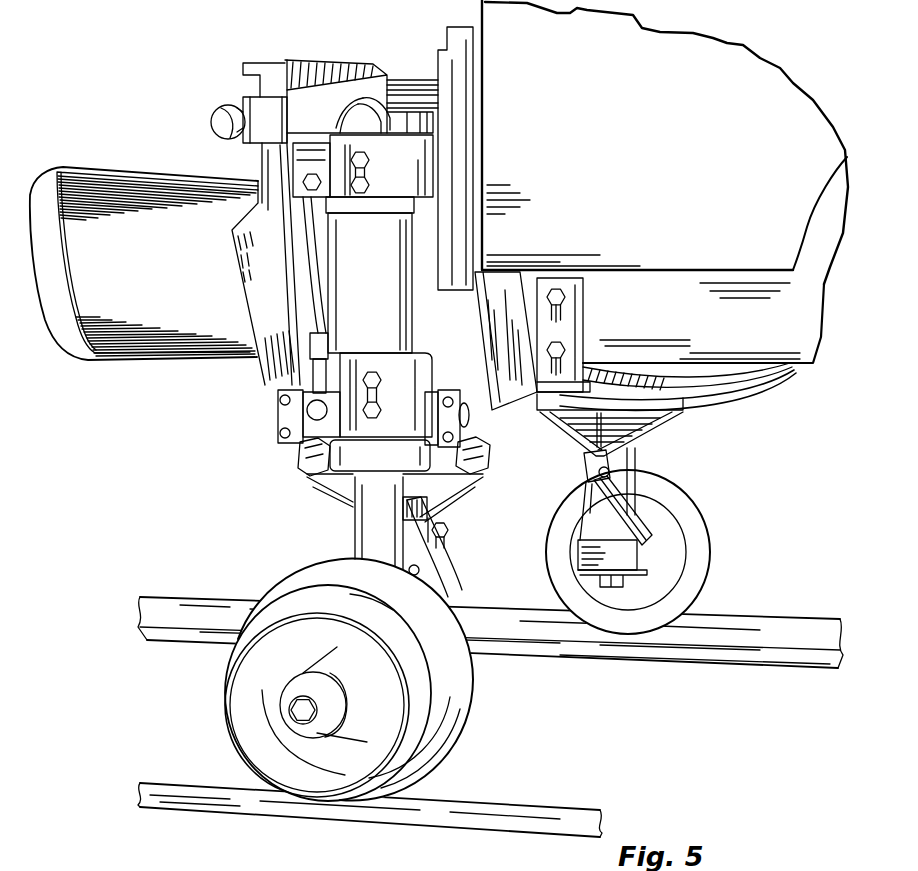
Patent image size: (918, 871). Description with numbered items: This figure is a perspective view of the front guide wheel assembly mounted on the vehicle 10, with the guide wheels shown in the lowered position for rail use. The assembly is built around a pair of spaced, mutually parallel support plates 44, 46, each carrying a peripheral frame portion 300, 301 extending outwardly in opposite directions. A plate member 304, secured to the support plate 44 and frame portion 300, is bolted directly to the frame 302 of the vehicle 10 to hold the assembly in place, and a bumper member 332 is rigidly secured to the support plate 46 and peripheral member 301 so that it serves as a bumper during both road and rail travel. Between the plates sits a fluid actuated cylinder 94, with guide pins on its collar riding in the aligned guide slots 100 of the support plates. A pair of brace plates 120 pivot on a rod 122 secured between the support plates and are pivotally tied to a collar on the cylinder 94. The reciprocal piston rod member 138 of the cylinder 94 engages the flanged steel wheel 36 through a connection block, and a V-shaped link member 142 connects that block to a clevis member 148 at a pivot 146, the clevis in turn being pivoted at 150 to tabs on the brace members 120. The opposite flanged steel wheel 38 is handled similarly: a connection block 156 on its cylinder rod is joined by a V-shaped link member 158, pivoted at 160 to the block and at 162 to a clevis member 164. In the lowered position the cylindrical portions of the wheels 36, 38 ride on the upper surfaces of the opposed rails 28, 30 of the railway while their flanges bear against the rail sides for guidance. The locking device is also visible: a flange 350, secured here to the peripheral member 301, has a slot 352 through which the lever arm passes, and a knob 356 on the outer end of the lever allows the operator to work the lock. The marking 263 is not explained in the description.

The vehicle 10 is at (694, 94).
The rail 28 is at (203, 790).
The rail 30 is at (213, 620).
The flanged steel wheel 36 is at (443, 760).
The flanged steel wheel 38 is at (677, 523).
The support plate 44 is at (593, 373).
The support plate 46 is at (300, 343).
The fluid actuated cylinder 94 is at (330, 292).
The guide slot 100 is at (367, 97).
The brace plate 120 is at (483, 377).
The rod 122 is at (470, 413).
The piston rod member 138 is at (373, 527).
The V-shaped link member 142 is at (430, 580).
The pivot connection 146 is at (448, 533).
The clevis member 148 is at (340, 493).
The pivot connection 150 is at (488, 460).
The connection block 156 is at (623, 557).
The V-shaped link member 158 is at (637, 490).
The pivot connection 160 is at (653, 547).
The pivot connection 162 is at (610, 473).
The clevis member 164 is at (657, 430).
The reference number 263 is at (305, 857).
The peripheral frame portion 300 is at (515, 300).
The peripheral frame portion 301 is at (248, 258).
The vehicle frame 302 is at (765, 347).
The plate member 304 is at (573, 317).
The bumper member 332 is at (87, 187).
The flange 350 is at (263, 110).
The slot 352 is at (258, 102).
The knob 356 is at (226, 134).